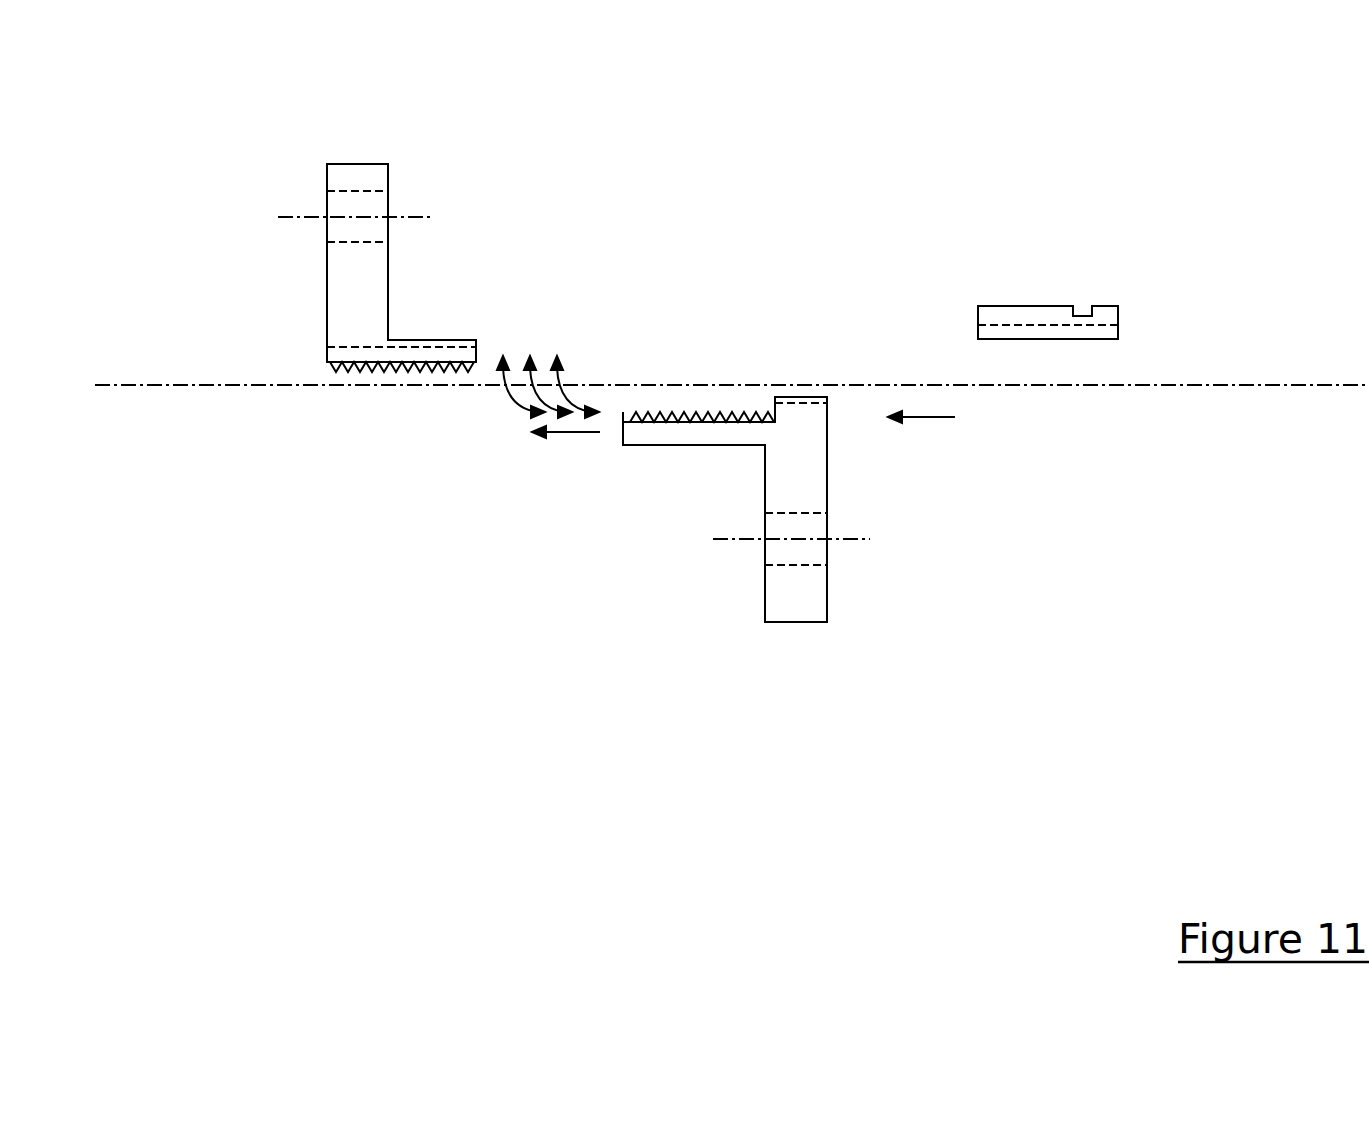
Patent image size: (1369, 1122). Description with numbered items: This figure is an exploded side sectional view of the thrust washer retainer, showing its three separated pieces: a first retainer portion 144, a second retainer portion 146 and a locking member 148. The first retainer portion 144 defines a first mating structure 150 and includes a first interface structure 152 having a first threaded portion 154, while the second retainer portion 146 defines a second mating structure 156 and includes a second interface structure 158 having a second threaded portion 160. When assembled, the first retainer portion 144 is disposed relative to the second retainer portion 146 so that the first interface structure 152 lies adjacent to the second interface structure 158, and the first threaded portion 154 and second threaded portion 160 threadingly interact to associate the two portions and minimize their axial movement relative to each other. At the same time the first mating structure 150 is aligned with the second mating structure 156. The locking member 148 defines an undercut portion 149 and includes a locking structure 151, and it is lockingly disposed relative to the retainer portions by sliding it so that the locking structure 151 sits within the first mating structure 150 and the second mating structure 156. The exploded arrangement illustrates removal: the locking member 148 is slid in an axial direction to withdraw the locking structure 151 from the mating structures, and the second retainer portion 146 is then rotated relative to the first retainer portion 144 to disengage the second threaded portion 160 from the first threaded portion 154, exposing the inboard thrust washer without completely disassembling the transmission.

The first retainer portion 144 is at (385, 272).
The second retainer portion 146 is at (691, 494).
The locking member 148 is at (1117, 246).
The undercut portion 149 is at (1058, 248).
The first mating structure 150 is at (440, 292).
The locking structure 151 is at (1034, 259).
The first interface structure 152 is at (272, 406).
The first threaded portion 154 is at (402, 437).
The second mating structure 156 is at (820, 347).
The second interface structure 158 is at (666, 347).
The second threaded portion 160 is at (739, 346).